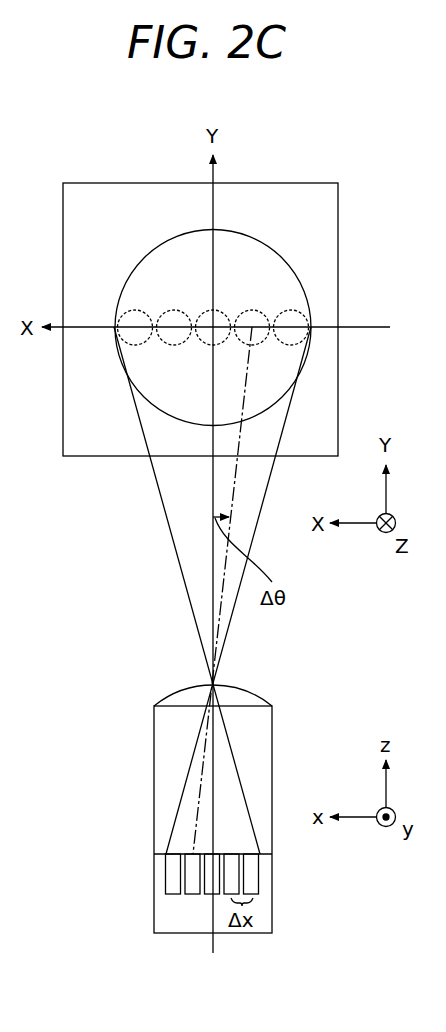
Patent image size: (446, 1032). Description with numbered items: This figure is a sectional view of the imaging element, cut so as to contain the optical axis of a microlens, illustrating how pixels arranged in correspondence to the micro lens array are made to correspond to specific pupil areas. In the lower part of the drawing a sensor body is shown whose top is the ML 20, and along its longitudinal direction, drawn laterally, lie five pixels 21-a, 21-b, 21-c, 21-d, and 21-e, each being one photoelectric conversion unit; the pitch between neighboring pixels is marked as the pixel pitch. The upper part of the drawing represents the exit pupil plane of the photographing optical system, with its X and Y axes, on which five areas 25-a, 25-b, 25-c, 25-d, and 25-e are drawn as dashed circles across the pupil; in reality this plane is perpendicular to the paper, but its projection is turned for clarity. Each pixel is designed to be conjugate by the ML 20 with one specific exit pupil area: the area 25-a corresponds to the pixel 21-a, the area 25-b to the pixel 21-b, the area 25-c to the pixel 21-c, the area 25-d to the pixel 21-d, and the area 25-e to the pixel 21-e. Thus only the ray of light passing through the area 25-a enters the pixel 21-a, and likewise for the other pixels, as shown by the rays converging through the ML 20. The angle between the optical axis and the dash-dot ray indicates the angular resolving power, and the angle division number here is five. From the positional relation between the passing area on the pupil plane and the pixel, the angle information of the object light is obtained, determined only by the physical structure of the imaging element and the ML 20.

The ML 20 is at (182, 690).
The pixel 21-a is at (166, 879).
The pixel 21-b is at (191, 897).
The pixel 21-c is at (208, 897).
The pixel 21-d is at (225, 897).
The pixel 21-e is at (259, 879).
The area 25-a is at (297, 308).
The area 25-b is at (258, 308).
The area 25-c is at (225, 308).
The area 25-d is at (174, 310).
The area 25-e is at (135, 310).